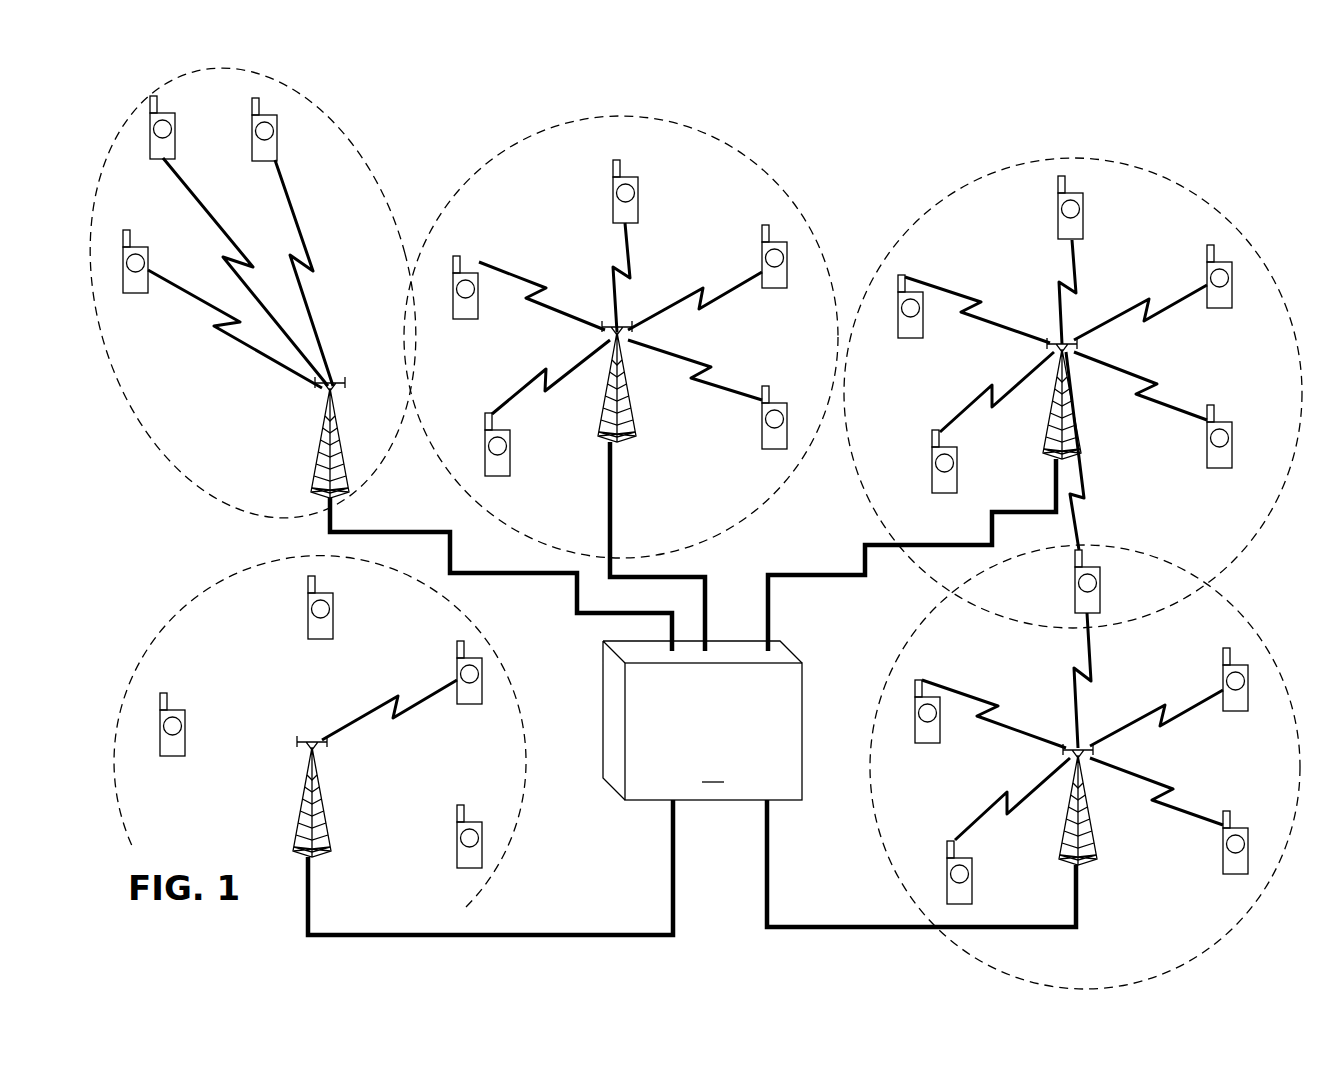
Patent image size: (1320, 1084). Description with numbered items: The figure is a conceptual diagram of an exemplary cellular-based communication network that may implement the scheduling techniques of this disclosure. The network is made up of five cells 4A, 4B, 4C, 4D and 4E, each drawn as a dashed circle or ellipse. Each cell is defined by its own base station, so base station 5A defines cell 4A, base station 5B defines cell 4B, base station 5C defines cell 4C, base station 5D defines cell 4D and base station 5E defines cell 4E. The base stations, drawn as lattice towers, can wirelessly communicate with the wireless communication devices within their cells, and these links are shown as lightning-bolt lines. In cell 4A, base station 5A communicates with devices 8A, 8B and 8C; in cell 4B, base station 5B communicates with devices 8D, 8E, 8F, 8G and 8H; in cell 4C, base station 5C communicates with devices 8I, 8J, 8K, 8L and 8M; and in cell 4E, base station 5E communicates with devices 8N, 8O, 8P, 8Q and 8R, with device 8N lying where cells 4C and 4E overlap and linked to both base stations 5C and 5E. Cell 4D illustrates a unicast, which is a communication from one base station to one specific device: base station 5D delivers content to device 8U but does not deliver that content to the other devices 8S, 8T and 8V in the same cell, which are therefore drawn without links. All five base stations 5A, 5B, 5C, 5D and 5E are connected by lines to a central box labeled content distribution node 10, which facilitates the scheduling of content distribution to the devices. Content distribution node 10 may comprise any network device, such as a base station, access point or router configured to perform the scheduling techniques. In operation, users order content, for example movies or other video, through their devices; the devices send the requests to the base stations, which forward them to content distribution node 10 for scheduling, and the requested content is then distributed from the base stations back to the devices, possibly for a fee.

The cell 4A is at (335, 128).
The cell 4B is at (703, 132).
The cell 4C is at (1198, 200).
The cell 4D is at (505, 668).
The cell 4E is at (1238, 607).
The base station 5A is at (340, 445).
The base station 5B is at (635, 425).
The base station 5C is at (1080, 447).
The base station 5D is at (325, 805).
The base station 5E is at (1098, 850).
The wireless communication device 8A is at (131, 238).
The wireless communication device 8B is at (158, 101).
The wireless communication device 8C is at (252, 137).
The wireless communication device 8D is at (453, 292).
The wireless communication device 8E is at (510, 448).
The wireless communication device 8F is at (637, 192).
The wireless communication device 8G is at (760, 232).
The wireless communication device 8H is at (762, 420).
The wireless communication device 8I is at (898, 305).
The wireless communication device 8J is at (1083, 212).
The wireless communication device 8K is at (957, 463).
The wireless communication device 8L is at (1232, 285).
The wireless communication device 8M is at (1232, 440).
The wireless communication device 8N is at (1100, 572).
The wireless communication device 8O is at (1248, 690).
The wireless communication device 8P is at (1248, 847).
The wireless communication device 8Q is at (972, 872).
The wireless communication device 8R is at (915, 718).
The wireless communication device 8S is at (167, 705).
The wireless communication device 8T is at (316, 590).
The wireless communication device 8U is at (457, 645).
The wireless communication device 8V is at (457, 843).
The content distribution node 10 is at (702, 720).